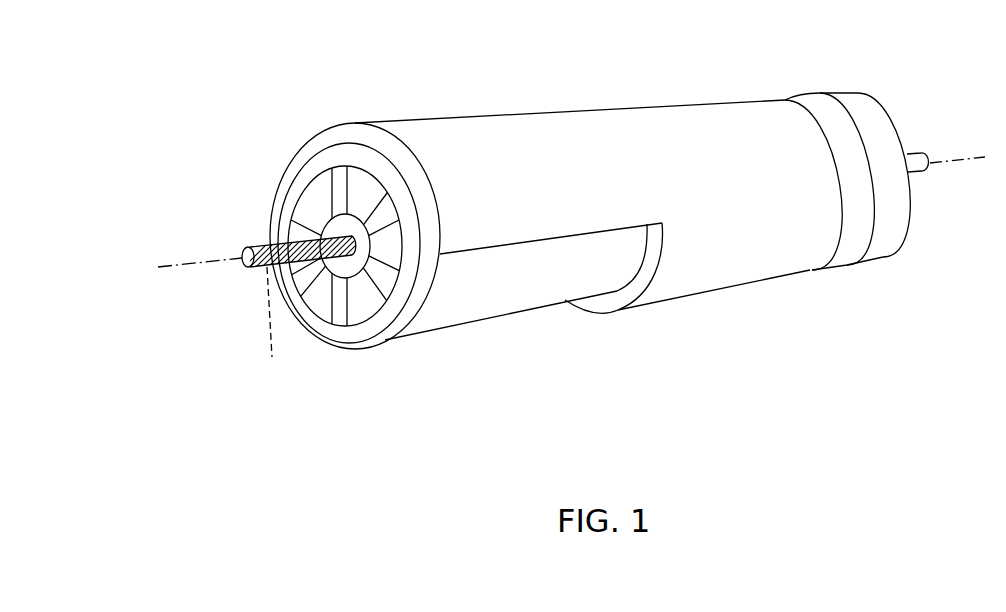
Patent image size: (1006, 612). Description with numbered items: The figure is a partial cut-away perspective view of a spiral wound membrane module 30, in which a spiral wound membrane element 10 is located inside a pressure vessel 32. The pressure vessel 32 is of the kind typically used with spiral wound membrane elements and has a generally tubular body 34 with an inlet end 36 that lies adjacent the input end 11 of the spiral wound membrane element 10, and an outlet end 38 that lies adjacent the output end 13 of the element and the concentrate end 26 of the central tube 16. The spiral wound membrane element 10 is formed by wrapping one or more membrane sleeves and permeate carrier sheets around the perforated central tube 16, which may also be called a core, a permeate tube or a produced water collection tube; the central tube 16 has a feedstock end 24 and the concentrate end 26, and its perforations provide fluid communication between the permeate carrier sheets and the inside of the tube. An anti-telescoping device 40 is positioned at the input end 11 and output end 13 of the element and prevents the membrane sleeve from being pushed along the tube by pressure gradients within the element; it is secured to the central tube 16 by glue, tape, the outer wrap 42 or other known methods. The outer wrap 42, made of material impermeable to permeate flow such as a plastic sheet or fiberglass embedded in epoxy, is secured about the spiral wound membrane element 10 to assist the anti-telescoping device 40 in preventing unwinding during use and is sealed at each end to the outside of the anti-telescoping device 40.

The spiral wound membrane element 10 is at (483, 307).
The input end 11 is at (903, 115).
The output end 13 is at (228, 193).
The central tube 16 is at (267, 268).
The feedstock end 24 is at (920, 156).
The concentrate end 26 is at (251, 249).
The spiral wound membrane module 30 is at (625, 60).
The pressure vessel 32 is at (710, 273).
The tubular body 34 is at (603, 303).
The inlet end 36 is at (922, 178).
The outlet end 38 is at (241, 177).
The anti-telescoping device 40 is at (295, 174).
The outer wrap 42 is at (525, 280).